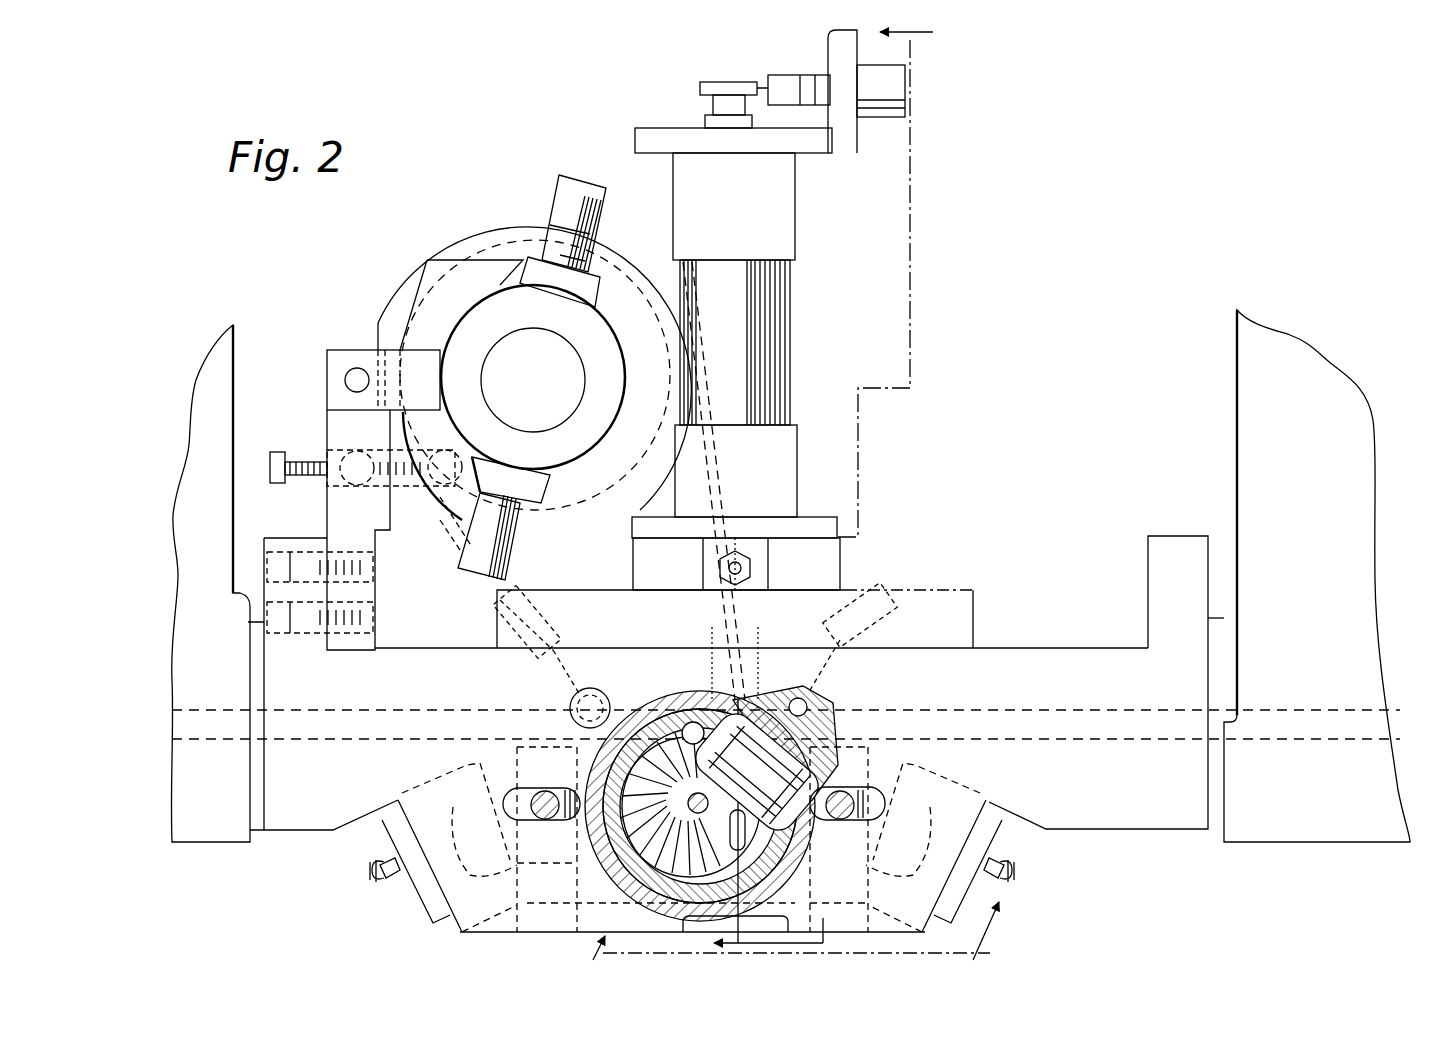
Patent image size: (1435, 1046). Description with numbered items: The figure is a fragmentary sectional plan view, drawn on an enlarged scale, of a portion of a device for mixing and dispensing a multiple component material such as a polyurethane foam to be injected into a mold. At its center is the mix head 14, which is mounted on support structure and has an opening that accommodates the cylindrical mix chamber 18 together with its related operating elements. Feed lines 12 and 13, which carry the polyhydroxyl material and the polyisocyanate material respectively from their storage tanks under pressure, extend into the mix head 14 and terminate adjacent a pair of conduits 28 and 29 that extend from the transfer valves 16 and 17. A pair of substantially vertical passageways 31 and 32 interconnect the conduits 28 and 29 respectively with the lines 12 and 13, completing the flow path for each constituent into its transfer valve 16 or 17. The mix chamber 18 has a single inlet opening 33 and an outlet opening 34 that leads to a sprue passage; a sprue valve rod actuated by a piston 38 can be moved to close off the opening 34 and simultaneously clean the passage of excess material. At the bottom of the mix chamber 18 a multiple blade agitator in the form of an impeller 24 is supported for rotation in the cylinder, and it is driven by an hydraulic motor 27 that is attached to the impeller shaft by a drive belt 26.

The feed line 12 is at (371, 680).
The feed line 13 is at (1145, 680).
The mix head 14 is at (320, 832).
The transfer valve 16 is at (460, 766).
The transfer valve 17 is at (935, 790).
The mix chamber 18 is at (600, 860).
The impeller 24 is at (660, 712).
The drive belt 26 is at (493, 590).
The hydraulic motor 27 is at (452, 235).
The conduit 28 is at (580, 667).
The conduit 29 is at (808, 667).
The vertical passageway 31 is at (570, 707).
The vertical passageway 32 is at (833, 692).
The inlet opening 33 is at (705, 708).
The outlet opening 34 is at (773, 872).
The piston 38 is at (780, 310).